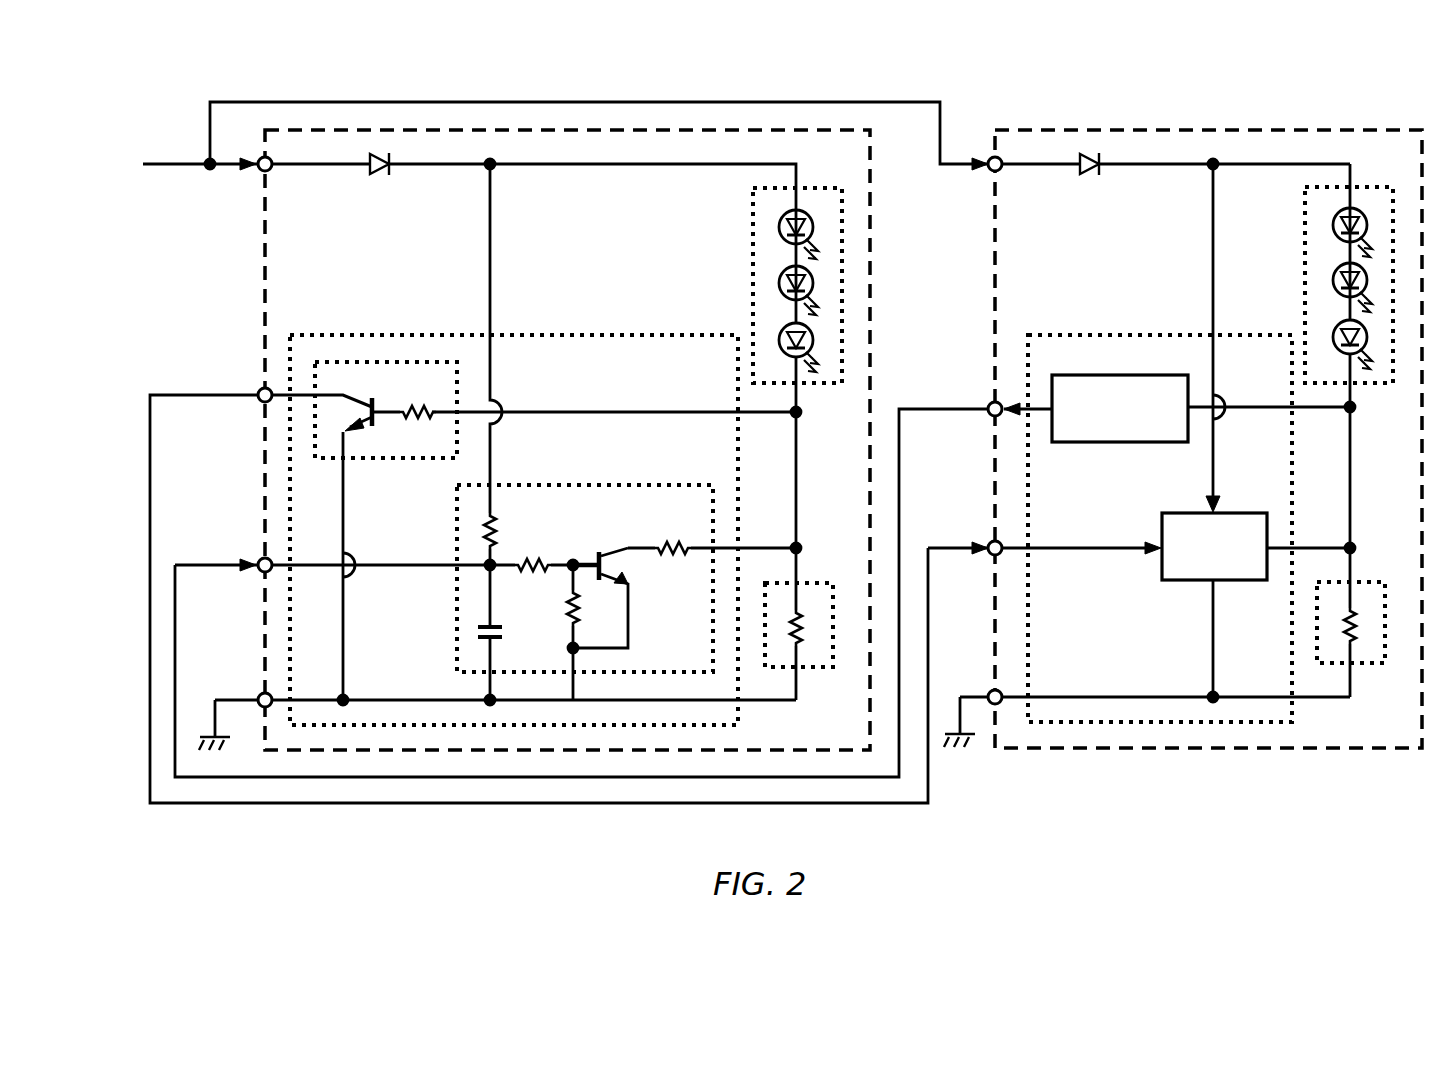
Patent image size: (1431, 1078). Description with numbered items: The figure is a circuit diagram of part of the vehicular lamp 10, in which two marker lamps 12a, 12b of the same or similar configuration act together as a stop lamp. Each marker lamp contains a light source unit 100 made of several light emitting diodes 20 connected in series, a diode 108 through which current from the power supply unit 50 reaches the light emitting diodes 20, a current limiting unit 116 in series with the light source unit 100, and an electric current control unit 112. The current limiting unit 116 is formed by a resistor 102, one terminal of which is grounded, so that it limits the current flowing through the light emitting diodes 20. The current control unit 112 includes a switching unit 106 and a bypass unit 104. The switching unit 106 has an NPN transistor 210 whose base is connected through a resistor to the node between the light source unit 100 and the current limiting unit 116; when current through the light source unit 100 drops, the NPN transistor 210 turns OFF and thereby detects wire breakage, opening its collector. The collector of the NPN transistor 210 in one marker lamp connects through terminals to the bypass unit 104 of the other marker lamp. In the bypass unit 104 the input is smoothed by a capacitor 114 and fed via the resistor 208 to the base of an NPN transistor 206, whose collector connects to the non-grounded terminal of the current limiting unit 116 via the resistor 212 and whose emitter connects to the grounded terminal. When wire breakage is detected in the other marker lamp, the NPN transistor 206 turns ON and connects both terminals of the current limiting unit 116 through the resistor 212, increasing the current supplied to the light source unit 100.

The vehicular lamp 10 is at (1392, 43).
The marker lamp 12a is at (870, 290).
The marker lamp 12b is at (1208, 130).
The light emitting diode 20 is at (778, 227).
The power supply unit 50 is at (179, 156).
The light source unit 100 is at (1050, 272).
The resistor 102 is at (802, 637).
The bypass unit 104 is at (872, 430).
The switching unit 106 is at (730, 531).
The diode 108 is at (392, 170).
The electric current control unit 112 is at (586, 335).
The capacitor 114 is at (478, 629).
The current limiting unit 116 is at (1382, 562).
The NPN transistor 206 is at (620, 558).
The resistor 208 is at (523, 561).
The NPN transistor 210 is at (352, 398).
The resistor 212 is at (666, 546).